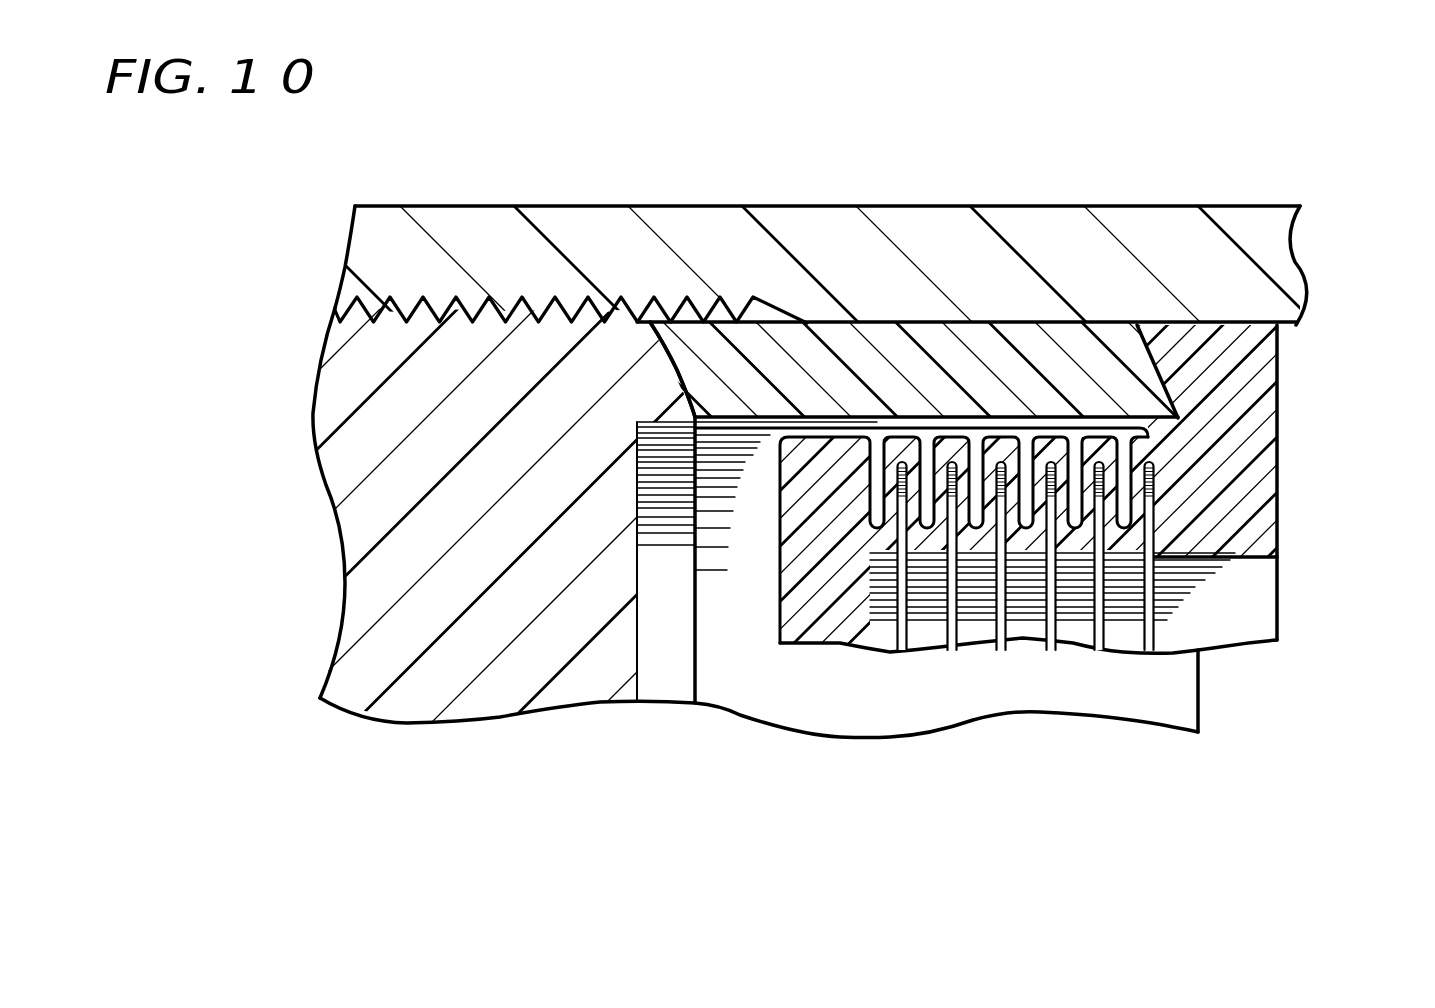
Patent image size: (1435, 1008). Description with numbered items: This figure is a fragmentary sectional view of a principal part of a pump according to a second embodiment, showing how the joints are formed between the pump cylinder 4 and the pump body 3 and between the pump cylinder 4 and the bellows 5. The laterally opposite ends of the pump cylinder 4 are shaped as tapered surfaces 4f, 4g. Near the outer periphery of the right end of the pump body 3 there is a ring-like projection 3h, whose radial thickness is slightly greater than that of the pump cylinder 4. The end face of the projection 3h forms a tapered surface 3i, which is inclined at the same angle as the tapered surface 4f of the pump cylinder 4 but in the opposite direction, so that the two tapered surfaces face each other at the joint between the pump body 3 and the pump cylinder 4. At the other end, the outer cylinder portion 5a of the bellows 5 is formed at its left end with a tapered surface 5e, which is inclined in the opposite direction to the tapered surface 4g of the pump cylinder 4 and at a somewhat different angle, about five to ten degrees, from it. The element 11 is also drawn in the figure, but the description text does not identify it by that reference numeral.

The plate 11 is at (603, 206).
The pump body 3 is at (367, 518).
The tapered surface 3i is at (687, 390).
The ring-like projection 3h is at (663, 422).
The pump cylinder 4 is at (880, 323).
The tapered surface 4f is at (670, 372).
The tapered surface 4g is at (1157, 415).
The bellows 5 is at (857, 648).
The outer cylinder portion 5a is at (1242, 402).
The tapered surface 5e is at (1157, 425).